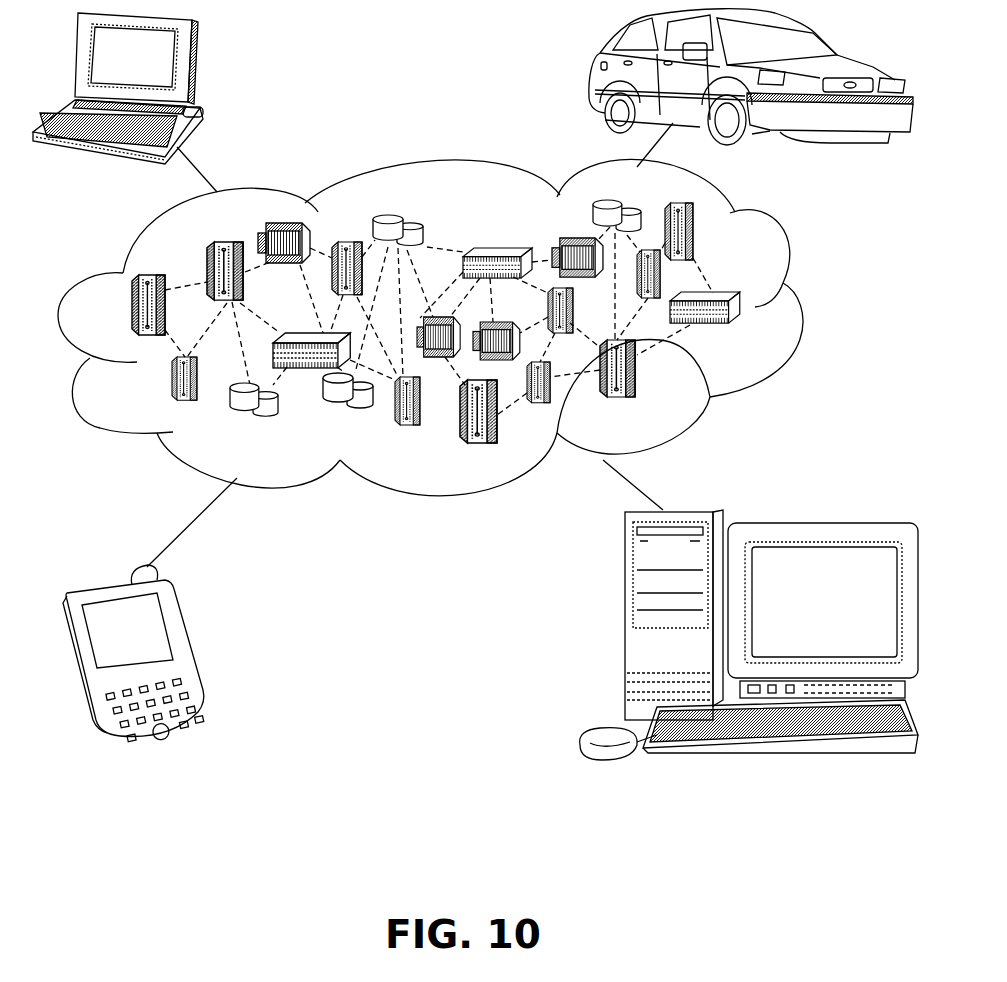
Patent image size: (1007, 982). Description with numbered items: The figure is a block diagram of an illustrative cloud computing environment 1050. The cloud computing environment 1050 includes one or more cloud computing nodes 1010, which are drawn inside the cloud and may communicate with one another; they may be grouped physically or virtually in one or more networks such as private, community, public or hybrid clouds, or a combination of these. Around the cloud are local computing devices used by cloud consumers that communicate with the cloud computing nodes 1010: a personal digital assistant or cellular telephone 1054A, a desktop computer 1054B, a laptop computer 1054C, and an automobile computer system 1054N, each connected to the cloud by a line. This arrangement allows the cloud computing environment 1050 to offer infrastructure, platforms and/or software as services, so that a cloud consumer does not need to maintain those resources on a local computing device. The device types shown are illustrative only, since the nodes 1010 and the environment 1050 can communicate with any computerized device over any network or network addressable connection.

The cloud computing environment 1050 is at (489, 327).
The cloud computing nodes 1010 is at (539, 321).
The personal digital assistant or cellular telephone 1054A is at (202, 657).
The desktop computer 1054B is at (697, 635).
The laptop computer 1054C is at (193, 88).
The automobile computer system 1054N is at (680, 77).